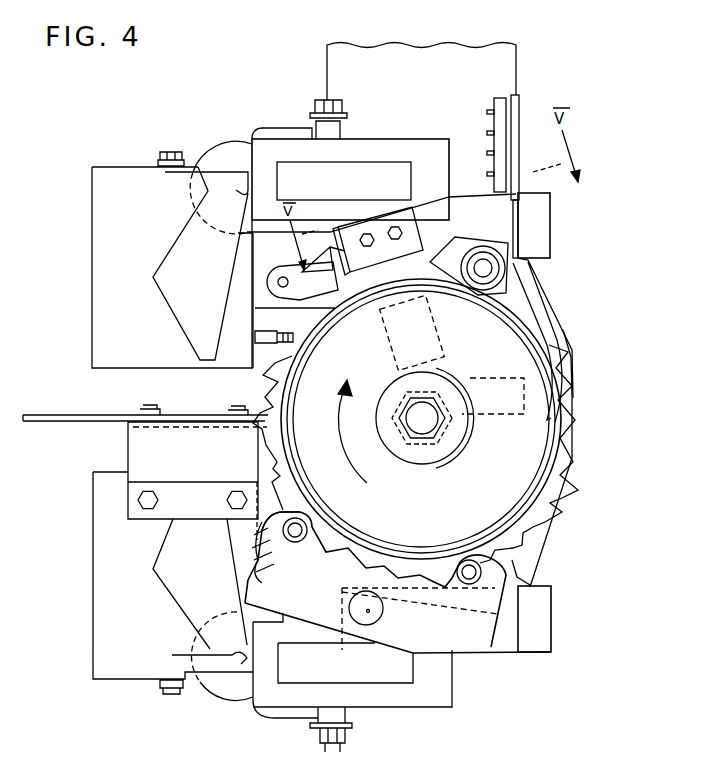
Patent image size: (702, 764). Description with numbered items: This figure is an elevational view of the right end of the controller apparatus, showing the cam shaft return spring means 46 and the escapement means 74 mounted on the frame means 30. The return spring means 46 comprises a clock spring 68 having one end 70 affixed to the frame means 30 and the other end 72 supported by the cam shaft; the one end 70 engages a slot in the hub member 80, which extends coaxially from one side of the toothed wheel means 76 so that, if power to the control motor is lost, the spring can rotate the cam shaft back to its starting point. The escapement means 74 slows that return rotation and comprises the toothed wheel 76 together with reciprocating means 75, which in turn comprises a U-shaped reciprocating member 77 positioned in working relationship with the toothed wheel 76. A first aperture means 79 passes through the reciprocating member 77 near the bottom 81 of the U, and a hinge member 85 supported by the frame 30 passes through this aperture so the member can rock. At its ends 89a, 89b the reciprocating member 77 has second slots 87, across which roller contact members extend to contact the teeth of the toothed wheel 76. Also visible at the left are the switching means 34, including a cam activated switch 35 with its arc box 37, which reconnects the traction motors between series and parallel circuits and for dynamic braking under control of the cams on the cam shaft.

The frame means 30 is at (550, 249).
The switching means 34 is at (92, 311).
The cam activated switch 35 is at (128, 172).
The arc box 37 is at (100, 560).
The cam shaft return spring means 46 is at (565, 393).
The clock spring 68 is at (532, 330).
The one end of clock spring 70 is at (522, 214).
The other end of clock spring 72 is at (462, 412).
The escapement means 74 is at (541, 509).
The reciprocating means 75 is at (495, 582).
The toothed wheel means 76 is at (579, 522).
The reciprocating member 77 is at (476, 640).
The first aperture means 79 is at (381, 605).
The hub member 80 is at (432, 368).
The bottom of U-shaped reciprocating member 81 is at (334, 613).
The hinge member 85 is at (372, 613).
The second slots 87 is at (263, 525).
The end of U-shaped reciprocating member 89a is at (267, 542).
The end of U-shaped reciprocating member 89b is at (500, 580).